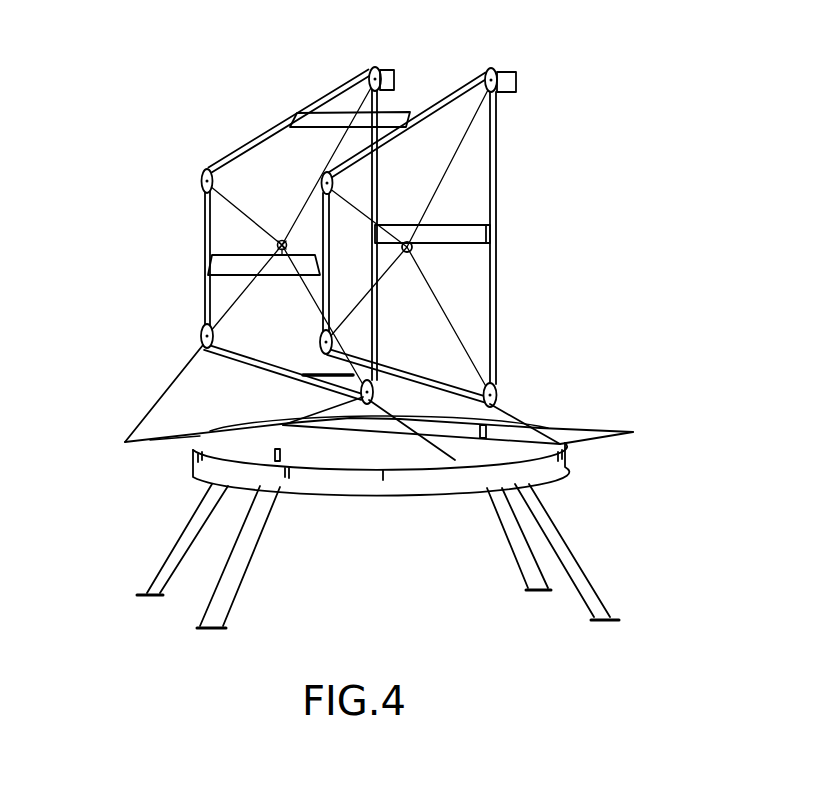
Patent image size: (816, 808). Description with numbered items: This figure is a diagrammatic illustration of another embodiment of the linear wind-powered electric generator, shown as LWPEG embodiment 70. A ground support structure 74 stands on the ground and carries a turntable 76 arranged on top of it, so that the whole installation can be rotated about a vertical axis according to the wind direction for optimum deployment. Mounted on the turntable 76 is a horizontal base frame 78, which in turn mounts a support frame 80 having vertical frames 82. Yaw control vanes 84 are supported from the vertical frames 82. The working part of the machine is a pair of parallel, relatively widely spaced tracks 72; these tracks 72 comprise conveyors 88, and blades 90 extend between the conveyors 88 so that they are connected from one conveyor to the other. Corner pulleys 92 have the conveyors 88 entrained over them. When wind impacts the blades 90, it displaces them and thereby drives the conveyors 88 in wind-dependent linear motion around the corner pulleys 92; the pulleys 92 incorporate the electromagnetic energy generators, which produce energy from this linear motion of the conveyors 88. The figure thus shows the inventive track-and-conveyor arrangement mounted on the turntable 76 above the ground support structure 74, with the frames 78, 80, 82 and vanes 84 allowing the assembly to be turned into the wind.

The LWPEG embodiment 70 is at (527, 231).
The tracks 72 is at (203, 250).
The ground support structure 74 is at (520, 572).
The turntable 76 is at (373, 493).
The horizontal base frame 78 is at (177, 445).
The support frame 80 is at (175, 373).
The vertical frames 82 is at (392, 230).
The yaw control vanes 84 is at (396, 70).
The conveyors 88 is at (203, 207).
The blades 90 is at (278, 245).
The corner pulleys 92 is at (360, 82).